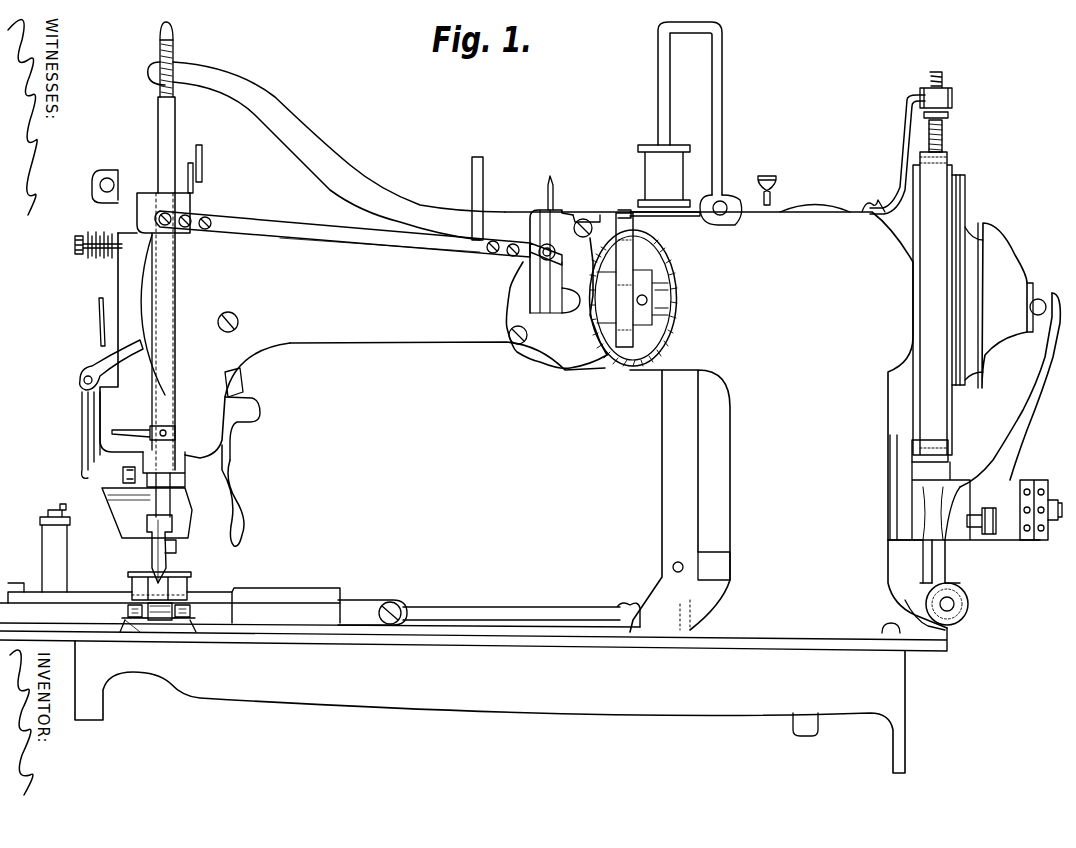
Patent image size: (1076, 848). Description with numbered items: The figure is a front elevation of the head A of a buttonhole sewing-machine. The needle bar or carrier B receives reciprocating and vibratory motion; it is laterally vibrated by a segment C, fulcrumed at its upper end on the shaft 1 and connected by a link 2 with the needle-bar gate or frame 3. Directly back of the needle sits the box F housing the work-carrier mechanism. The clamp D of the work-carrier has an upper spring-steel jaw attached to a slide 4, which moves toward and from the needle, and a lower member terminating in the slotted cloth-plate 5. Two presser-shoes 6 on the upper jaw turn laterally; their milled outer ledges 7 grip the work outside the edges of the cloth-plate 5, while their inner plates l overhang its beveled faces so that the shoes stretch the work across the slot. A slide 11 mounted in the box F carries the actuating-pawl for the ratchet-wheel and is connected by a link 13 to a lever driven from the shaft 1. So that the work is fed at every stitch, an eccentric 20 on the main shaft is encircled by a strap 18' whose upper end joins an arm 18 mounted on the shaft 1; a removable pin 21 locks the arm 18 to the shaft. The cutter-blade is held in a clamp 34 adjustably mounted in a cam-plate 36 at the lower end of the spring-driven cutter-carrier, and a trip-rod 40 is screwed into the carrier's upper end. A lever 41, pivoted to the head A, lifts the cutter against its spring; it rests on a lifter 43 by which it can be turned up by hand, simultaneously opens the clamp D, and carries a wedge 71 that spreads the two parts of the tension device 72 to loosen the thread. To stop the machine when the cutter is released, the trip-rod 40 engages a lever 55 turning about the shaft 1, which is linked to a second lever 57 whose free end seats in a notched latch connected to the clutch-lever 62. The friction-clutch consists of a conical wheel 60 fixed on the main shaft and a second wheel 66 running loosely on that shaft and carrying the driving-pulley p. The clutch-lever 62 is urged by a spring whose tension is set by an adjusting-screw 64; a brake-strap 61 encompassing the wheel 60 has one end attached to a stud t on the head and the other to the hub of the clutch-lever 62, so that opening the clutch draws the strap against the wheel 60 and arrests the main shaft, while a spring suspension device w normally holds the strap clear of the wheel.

The head of the sewing-machine A is at (523, 404).
The needle bar or carrier B is at (168, 140).
The segment C is at (530, 283).
The clamp of the work-carrier D is at (135, 587).
The box F is at (286, 595).
The shaft 1 is at (551, 232).
The link 2 is at (320, 232).
The needle-bar gate or frame 3 is at (163, 197).
The slide 4 is at (212, 604).
The cloth-plate 5 is at (158, 622).
The presser-shoes 6 is at (127, 608).
The outer side ledges 7 is at (212, 615).
The slide 11 is at (372, 612).
The link 13 is at (508, 616).
The arm 18 is at (636, 183).
The strap 18' is at (700, 143).
The eccentric 20 is at (637, 290).
The removable pin 21 is at (553, 180).
The clamp 34 is at (178, 552).
The cam-plate 36 is at (147, 513).
The trip-rod 40 is at (170, 45).
The lever 41 is at (94, 348).
The lifter 43 is at (247, 503).
The lever 55 is at (326, 151).
The second lever 57 is at (705, 591).
The conical wheel 60 is at (961, 190).
The brake-strap 61 is at (932, 303).
The clutch-lever 62 is at (1041, 397).
The adjusting-screw 64 is at (969, 607).
The second wheel 66 is at (963, 222).
The wedge 71 is at (100, 312).
The tension device 72 is at (96, 258).
The inner faces or plates l is at (142, 620).
The driving-pulley p is at (980, 254).
The stud t is at (905, 452).
The spring suspension device w is at (946, 133).